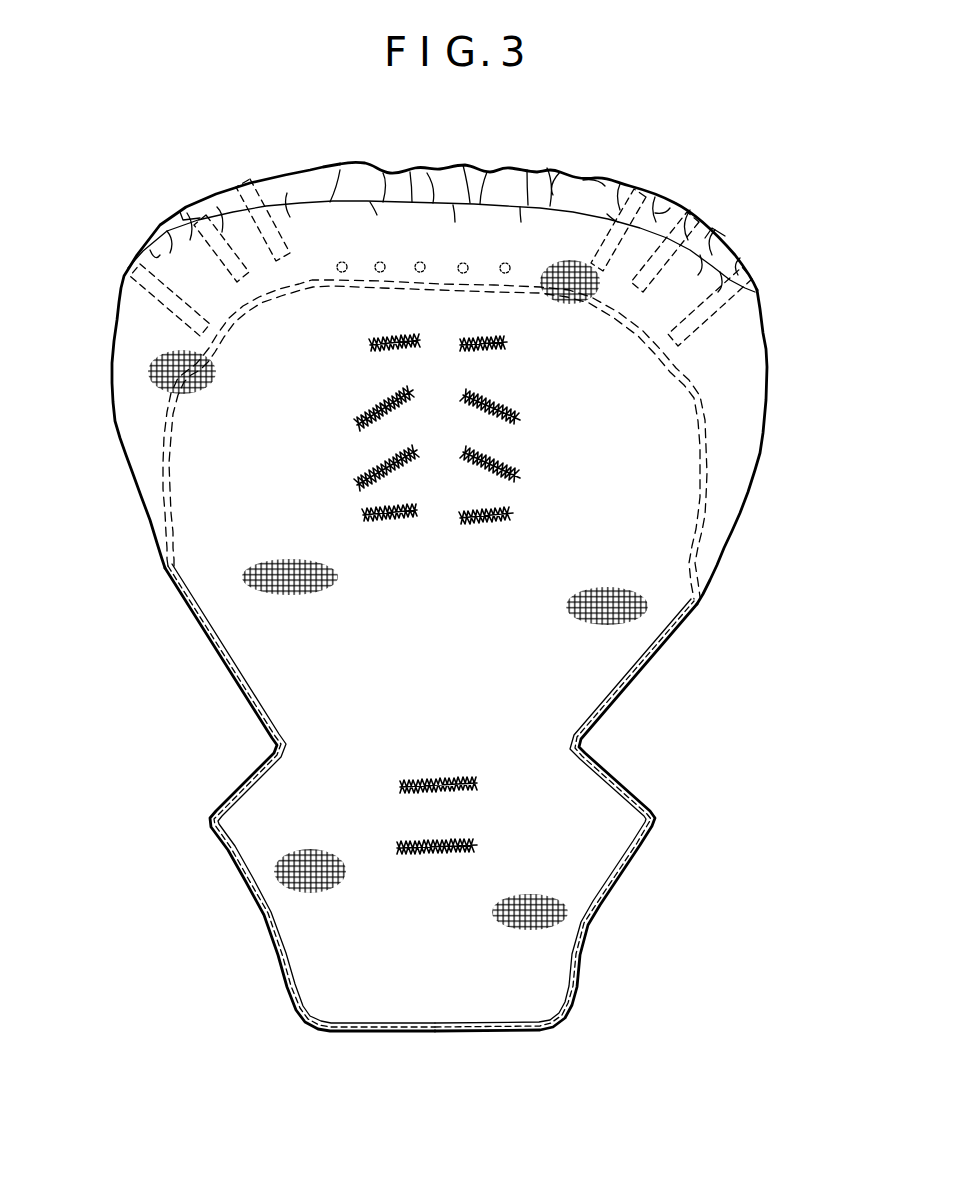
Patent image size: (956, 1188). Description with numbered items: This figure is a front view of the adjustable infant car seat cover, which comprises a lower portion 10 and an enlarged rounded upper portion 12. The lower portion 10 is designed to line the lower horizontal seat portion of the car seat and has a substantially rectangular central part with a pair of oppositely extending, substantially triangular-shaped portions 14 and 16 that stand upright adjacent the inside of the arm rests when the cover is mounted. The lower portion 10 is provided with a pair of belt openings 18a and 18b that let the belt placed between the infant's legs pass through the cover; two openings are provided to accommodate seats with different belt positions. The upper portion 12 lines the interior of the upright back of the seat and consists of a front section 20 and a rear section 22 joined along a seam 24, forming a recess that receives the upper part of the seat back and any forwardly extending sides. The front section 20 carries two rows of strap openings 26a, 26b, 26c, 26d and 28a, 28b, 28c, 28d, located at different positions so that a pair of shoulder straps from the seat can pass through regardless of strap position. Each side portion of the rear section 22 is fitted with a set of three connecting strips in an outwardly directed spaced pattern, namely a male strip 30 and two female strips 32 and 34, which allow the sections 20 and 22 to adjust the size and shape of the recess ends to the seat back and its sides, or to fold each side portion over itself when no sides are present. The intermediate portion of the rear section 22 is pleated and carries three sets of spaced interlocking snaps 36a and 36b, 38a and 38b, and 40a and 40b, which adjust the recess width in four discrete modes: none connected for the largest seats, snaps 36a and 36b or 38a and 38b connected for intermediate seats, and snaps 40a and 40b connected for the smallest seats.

The lower portion 10 is at (447, 577).
The upper portion 12 is at (211, 565).
The triangular-shaped portion 14 is at (247, 812).
The triangular-shaped portion 16 is at (610, 815).
The belt opening 18a is at (470, 846).
The belt opening 18b is at (473, 782).
The front section 20 is at (661, 425).
The rear section 22 is at (745, 373).
The seam 24 is at (505, 208).
The strap opening 26a is at (368, 518).
The strap opening 26b is at (362, 483).
The strap opening 26c is at (360, 420).
The strap opening 26d is at (377, 343).
The strap opening 28a is at (512, 517).
The strap opening 28b is at (515, 473).
The strap opening 28c is at (518, 413).
The strap opening 28d is at (505, 345).
The male strip 30 is at (117, 264).
The female strip 32 is at (180, 198).
The female strip 34 is at (250, 186).
The snap 36a is at (464, 263).
The snap 36b is at (437, 233).
The snap 38a is at (512, 262).
The snap 38b is at (380, 261).
The snap 40a is at (573, 305).
The snap 40b is at (334, 266).